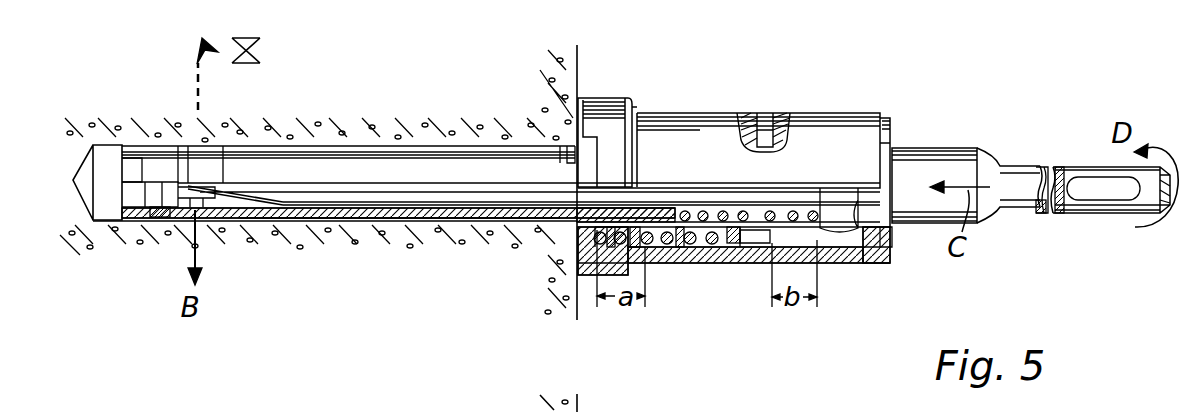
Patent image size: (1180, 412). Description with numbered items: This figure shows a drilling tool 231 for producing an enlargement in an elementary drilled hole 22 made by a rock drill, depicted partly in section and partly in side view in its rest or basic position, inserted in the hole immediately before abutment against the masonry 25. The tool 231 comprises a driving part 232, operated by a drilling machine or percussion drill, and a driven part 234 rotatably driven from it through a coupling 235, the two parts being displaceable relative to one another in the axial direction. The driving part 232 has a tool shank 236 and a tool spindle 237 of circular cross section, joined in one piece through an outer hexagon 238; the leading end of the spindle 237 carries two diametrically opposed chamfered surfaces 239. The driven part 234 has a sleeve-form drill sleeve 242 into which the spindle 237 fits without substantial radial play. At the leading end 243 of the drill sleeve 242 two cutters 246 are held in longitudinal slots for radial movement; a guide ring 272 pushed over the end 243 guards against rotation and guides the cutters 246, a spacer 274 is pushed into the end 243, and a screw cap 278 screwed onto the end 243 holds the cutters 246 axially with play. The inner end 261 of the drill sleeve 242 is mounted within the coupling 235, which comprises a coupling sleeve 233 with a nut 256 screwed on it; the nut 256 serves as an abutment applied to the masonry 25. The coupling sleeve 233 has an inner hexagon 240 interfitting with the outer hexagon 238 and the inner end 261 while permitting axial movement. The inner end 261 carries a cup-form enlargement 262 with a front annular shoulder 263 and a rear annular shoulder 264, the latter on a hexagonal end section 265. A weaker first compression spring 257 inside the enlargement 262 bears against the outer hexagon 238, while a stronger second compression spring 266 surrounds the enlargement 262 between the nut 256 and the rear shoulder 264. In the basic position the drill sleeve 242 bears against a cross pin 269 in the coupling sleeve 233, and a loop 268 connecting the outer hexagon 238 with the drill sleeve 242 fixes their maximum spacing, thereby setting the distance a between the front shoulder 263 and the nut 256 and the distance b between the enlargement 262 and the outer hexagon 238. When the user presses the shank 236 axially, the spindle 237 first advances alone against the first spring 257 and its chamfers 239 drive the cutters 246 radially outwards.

The elementary drilled hole 22 is at (401, 152).
The masonry 25 is at (467, 237).
The drilling tool 231 is at (1016, 232).
The driving part 232 is at (935, 138).
The coupling sleeve 233 is at (818, 140).
The driven part 234 is at (641, 103).
The coupling 235 is at (675, 111).
The tool shank 236 is at (1075, 168).
The tool spindle 237 is at (325, 187).
The outer hexagon 238 is at (890, 236).
The chamfered surfaces 239 is at (255, 220).
The inner hexagon 240 is at (724, 244).
The drill sleeve 242 is at (384, 224).
The end of the drill sleeve 243 is at (122, 196).
The cutter 246 is at (204, 215).
The nut 256 is at (578, 118).
The first compression spring 257 is at (823, 193).
The inner end of the drill sleeve 261 is at (652, 207).
The cup-form enlargement 262 is at (702, 250).
The front annular shoulder 263 is at (598, 230).
The rear annular shoulder 264 is at (733, 233).
The end section 265 is at (760, 227).
The second compression spring 266 is at (682, 246).
The loop 268 is at (822, 255).
The cross pin 269 is at (756, 113).
The guide ring 272 is at (183, 162).
The spacer 274 is at (160, 215).
The screw cap 278 is at (132, 150).